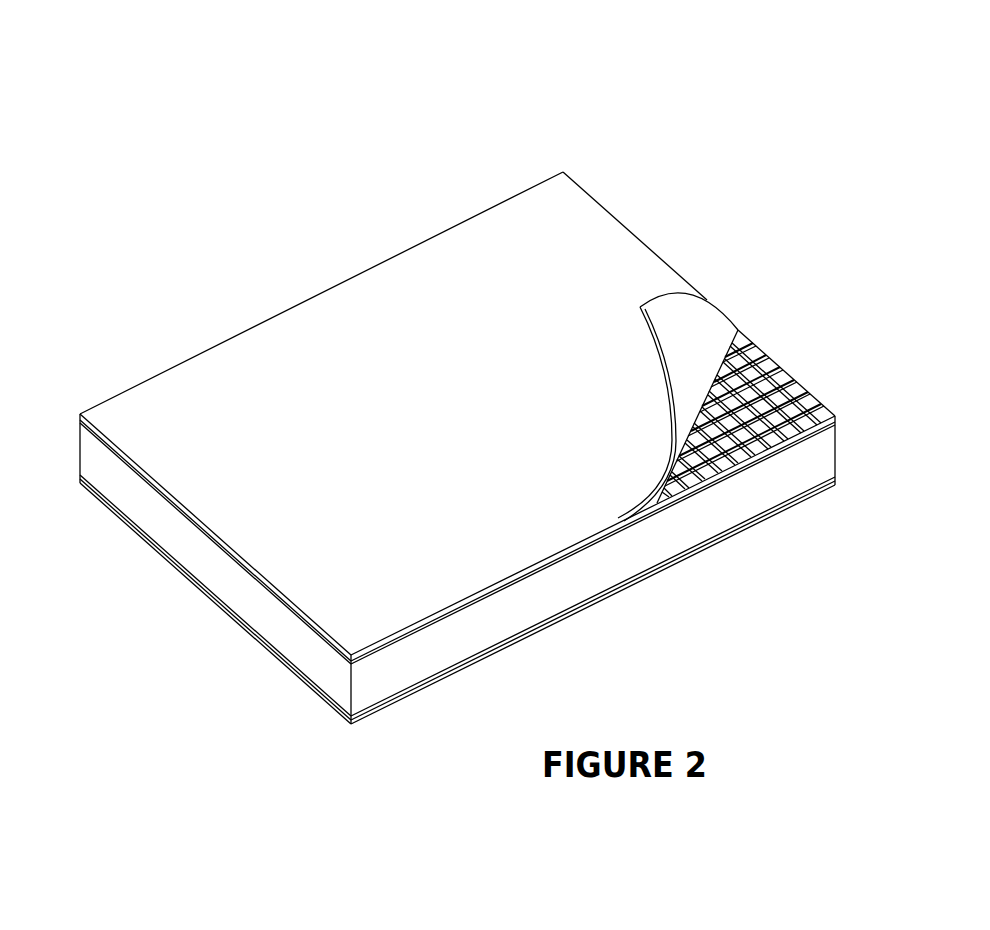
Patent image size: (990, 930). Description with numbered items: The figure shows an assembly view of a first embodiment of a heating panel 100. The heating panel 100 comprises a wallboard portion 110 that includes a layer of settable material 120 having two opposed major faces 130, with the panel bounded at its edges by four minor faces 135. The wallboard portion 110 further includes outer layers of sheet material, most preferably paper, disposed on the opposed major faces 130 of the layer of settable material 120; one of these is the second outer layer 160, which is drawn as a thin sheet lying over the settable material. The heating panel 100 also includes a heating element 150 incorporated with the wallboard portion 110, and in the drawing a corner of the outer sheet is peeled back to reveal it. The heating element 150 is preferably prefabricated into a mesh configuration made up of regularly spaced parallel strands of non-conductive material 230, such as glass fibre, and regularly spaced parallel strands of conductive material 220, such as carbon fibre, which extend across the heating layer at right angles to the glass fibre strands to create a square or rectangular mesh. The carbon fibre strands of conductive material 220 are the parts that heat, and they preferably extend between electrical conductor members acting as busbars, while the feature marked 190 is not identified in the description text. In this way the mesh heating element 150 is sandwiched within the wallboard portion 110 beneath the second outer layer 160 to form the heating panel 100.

The heating panel 100 is at (533, 388).
The wallboard portion 110 is at (533, 565).
The layer of settable material 120 is at (807, 458).
The major faces 130 is at (422, 435).
The minor faces 135 is at (292, 637).
The heating element 150 is at (803, 486).
The second outer layer 160 is at (576, 237).
The mesh openings 190 is at (757, 462).
The strands of conductive material 220 is at (802, 385).
The strands of non-conductive material 230 is at (838, 405).